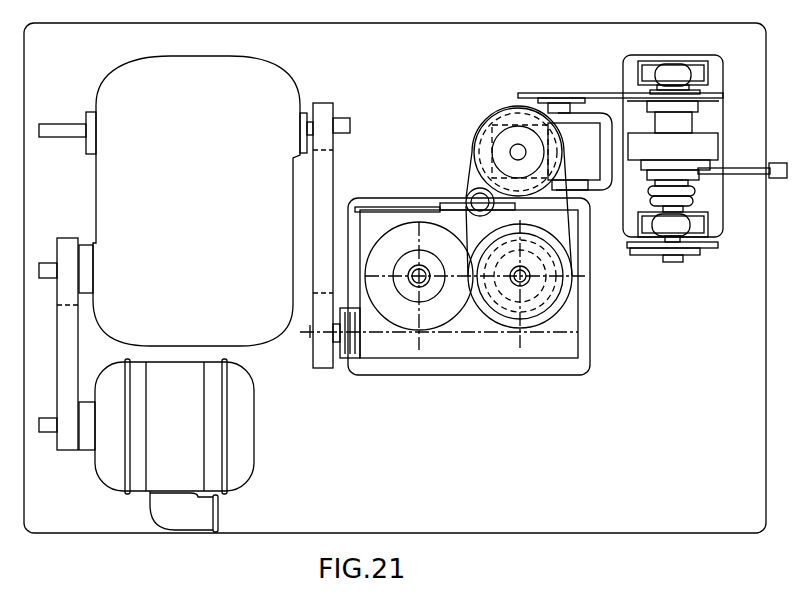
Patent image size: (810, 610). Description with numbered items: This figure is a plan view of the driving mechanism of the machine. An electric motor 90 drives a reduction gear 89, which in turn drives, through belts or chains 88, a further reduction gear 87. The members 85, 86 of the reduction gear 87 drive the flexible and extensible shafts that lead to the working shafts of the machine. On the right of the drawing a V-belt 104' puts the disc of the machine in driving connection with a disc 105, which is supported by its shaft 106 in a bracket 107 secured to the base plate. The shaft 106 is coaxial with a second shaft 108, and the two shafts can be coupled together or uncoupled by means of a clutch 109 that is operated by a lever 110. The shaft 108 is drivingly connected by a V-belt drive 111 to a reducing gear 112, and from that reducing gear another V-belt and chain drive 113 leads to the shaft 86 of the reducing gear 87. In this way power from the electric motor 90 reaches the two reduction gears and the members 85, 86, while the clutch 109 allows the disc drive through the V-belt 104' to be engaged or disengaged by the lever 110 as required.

The driving member 85 is at (423, 272).
The driving member 86 is at (513, 285).
The reduction gear 87 is at (397, 352).
The belts or chains 88 is at (325, 175).
The reduction gear 89 is at (282, 80).
The electric motor 90 is at (247, 430).
The V-belt 104' is at (694, 257).
The disc 105 is at (652, 254).
The shaft 106 is at (675, 248).
The bracket 107 is at (715, 212).
The second shaft 108 is at (690, 123).
The clutch 109 is at (707, 146).
The lever 110 is at (778, 178).
The V-belt drive 111 is at (627, 93).
The reducing gear 112 is at (600, 185).
The V-belt and chain drive 113 is at (470, 178).